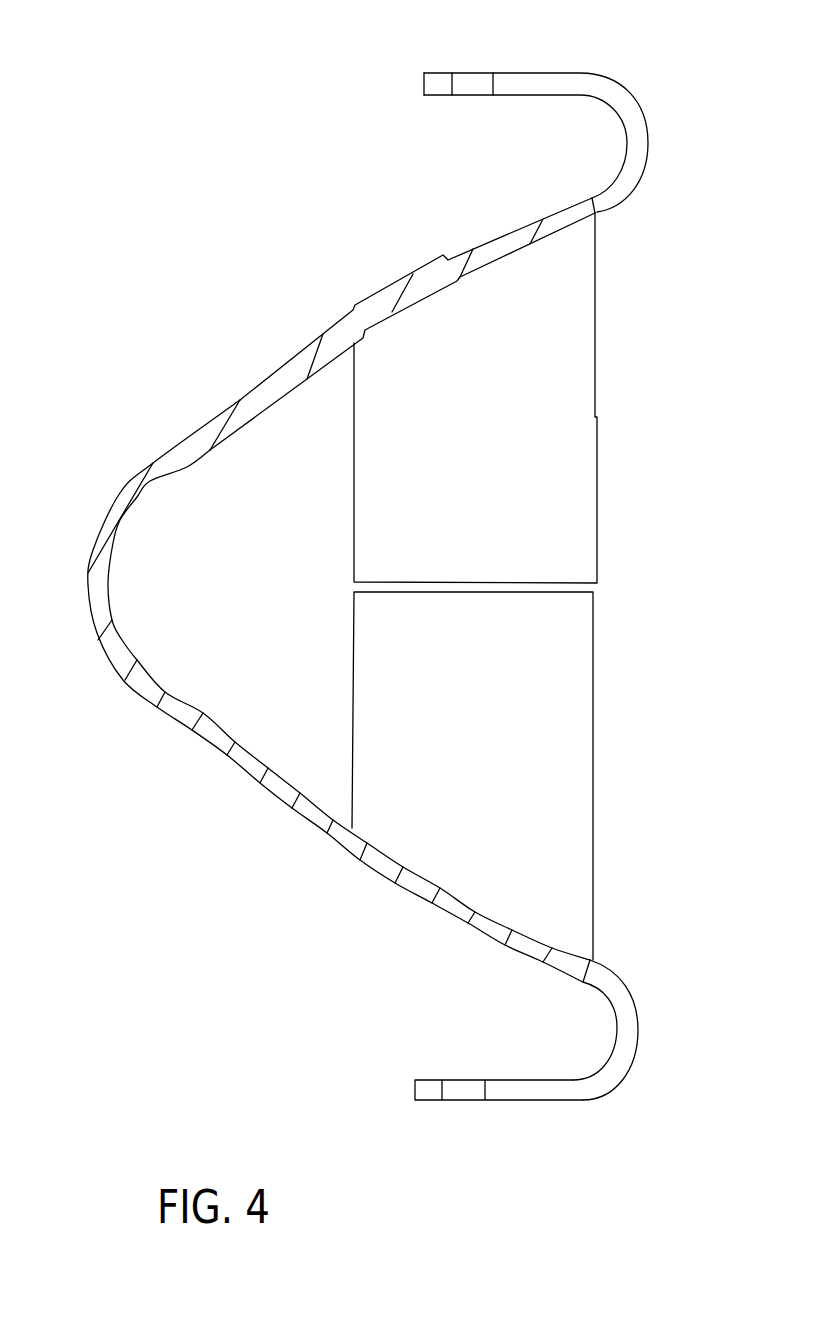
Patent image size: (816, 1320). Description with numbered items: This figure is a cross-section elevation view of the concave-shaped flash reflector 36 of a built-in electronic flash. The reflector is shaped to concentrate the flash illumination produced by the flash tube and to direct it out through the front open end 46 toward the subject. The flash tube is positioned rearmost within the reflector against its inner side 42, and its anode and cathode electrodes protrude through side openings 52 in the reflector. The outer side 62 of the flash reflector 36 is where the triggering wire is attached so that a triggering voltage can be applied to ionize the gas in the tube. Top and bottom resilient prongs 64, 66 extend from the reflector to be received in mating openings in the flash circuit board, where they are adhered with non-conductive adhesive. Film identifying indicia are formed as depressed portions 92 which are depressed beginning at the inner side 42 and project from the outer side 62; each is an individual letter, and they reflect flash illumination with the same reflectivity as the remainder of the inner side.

The flash reflector 36 is at (172, 418).
The inner side 42 is at (210, 453).
The front open end 46 is at (592, 960).
The side openings 52 is at (168, 642).
The outer side 62 is at (232, 402).
The top resilient prong 64 is at (520, 72).
The bottom resilient prong 66 is at (498, 1103).
The depressed portions 92 is at (416, 280).